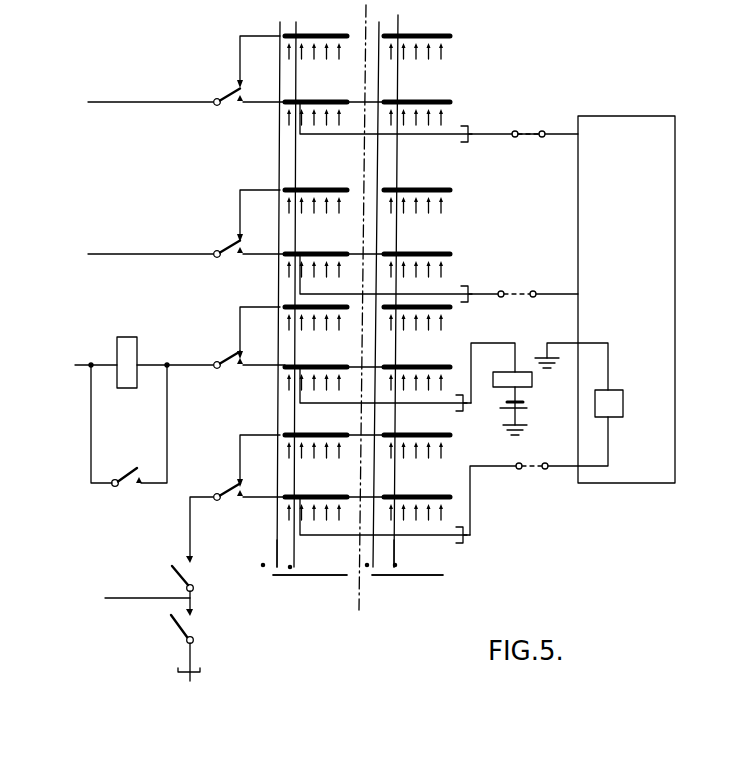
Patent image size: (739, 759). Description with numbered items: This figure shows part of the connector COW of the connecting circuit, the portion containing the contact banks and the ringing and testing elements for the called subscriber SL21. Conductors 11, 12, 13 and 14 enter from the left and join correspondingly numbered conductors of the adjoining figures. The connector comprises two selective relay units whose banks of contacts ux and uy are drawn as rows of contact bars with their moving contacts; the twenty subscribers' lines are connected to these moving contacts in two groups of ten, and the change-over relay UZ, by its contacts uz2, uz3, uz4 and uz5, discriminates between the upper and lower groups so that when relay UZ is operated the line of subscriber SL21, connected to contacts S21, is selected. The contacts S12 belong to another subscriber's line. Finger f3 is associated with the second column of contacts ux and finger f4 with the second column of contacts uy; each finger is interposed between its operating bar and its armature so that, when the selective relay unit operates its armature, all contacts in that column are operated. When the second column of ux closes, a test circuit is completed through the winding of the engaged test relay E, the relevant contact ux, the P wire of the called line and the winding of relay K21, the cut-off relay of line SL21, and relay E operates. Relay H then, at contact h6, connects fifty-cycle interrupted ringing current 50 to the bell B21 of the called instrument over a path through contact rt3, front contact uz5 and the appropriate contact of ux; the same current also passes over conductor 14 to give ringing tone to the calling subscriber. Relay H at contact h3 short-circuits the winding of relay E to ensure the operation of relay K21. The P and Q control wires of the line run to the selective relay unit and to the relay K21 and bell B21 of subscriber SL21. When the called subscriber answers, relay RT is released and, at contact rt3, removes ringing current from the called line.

The conductor 11 is at (136, 101).
The conductor 12 is at (136, 255).
The conductor 13 is at (132, 365).
The conductor 14 is at (133, 600).
The subscriber's line S12 is at (278, 445).
The line of subscriber SL21 S21 is at (306, 102).
The contact of change-over relay UZ uz2 is at (249, 110).
The contact of change-over relay UZ uz3 is at (249, 262).
The contact of change-over relay UZ uz4 is at (249, 373).
The contact of change-over relay UZ uz5 is at (249, 505).
The engaged test relay E is at (140, 315).
The contact of relay H h3 is at (129, 441).
The contact of relay RT rt3 is at (174, 564).
The contact of relay H h6 is at (176, 610).
The 50-cycle interrupted ringing current 50 is at (142, 689).
The connector COW is at (382, 173).
The called subscriber SL21 is at (650, 286).
The P control wire P is at (494, 340).
The Q control wire Q is at (504, 468).
The cut-off relay K21 is at (567, 393).
The bell B21 is at (601, 404).
The bank of contacts of selective relay unit UX ux is at (333, 493).
The bank of contacts of selective relay unit UY uy is at (437, 493).
The finger f3 is at (292, 568).
The finger f4 is at (393, 568).